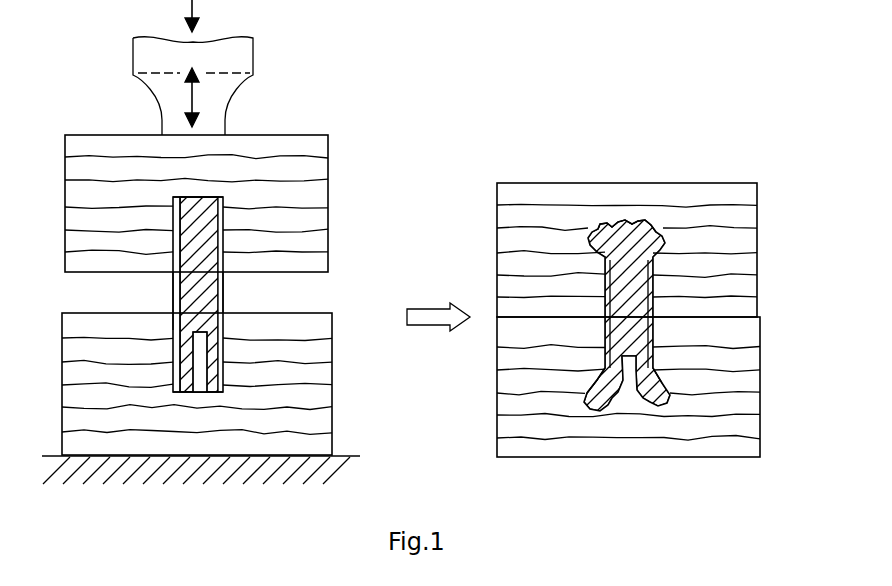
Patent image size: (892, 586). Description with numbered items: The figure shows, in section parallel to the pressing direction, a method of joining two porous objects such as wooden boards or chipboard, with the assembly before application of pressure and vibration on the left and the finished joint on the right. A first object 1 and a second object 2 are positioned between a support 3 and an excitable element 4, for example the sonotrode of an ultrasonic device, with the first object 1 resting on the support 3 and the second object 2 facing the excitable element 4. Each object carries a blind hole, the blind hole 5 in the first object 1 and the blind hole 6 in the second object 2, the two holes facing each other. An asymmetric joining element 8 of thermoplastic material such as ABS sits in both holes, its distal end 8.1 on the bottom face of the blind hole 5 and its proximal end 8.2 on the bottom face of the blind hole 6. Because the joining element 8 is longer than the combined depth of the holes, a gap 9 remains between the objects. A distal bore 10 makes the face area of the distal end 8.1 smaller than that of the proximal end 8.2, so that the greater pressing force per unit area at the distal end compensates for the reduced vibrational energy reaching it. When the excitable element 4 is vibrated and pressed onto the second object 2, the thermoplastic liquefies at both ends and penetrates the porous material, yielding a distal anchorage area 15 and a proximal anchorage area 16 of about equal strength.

The first object 1 is at (315, 397).
The second object 2 is at (310, 195).
The support 3 is at (330, 473).
The excitable element 4 is at (237, 58).
The blind hole 5 is at (176, 313).
The blind hole 6 is at (176, 218).
The joining element 8 is at (366, 309).
The distal end 8.1 is at (211, 385).
The proximal end 8.2 is at (195, 215).
The gap 9 is at (85, 295).
The distal bore 10 is at (200, 380).
The distal anchorage area 15 is at (617, 413).
The proximal anchorage area 16 is at (612, 228).